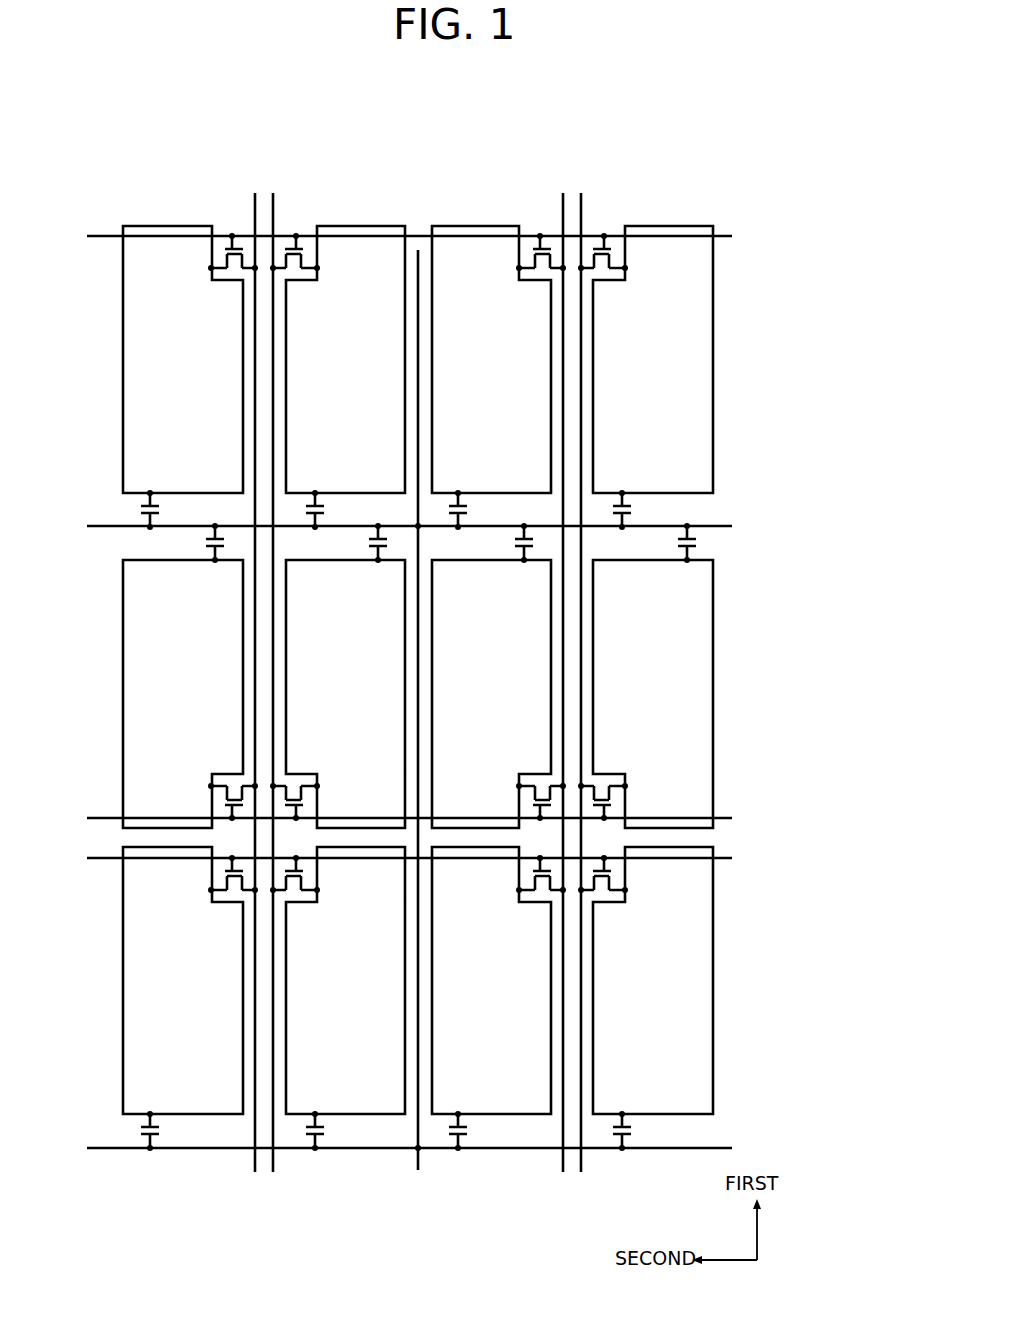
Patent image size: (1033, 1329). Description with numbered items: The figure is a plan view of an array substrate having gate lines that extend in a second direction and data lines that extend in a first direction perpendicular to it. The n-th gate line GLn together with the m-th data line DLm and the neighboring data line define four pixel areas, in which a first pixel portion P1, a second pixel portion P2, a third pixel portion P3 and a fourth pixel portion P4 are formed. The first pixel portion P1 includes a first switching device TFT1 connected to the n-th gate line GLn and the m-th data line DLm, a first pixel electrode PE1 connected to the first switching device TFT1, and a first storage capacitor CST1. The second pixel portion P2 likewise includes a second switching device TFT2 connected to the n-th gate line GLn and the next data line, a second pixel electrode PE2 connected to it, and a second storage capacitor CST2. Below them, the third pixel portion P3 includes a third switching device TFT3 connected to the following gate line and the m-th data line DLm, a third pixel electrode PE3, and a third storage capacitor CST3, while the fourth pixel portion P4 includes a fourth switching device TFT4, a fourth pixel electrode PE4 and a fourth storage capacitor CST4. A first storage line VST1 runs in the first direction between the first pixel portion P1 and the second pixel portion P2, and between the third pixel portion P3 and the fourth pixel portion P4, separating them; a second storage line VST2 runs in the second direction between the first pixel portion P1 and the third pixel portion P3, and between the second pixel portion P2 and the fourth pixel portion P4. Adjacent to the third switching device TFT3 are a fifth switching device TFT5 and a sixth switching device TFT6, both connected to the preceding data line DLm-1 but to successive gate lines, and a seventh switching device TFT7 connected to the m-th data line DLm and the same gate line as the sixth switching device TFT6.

The (m−1)-th data line DLm-1 is at (255, 195).
The m-th data line DLm is at (273, 195).
The n-th gate line GLn is at (732, 240).
The first storage line VST1 is at (418, 1162).
The second storage line VST2 is at (732, 530).
The first switching device TFT1 is at (317, 268).
The second switching device TFT2 is at (519, 268).
The third switching device TFT3 is at (317, 787).
The fourth switching device TFT4 is at (519, 787).
The fifth switching device TFT5 is at (212, 787).
The sixth switching device TFT6 is at (212, 890).
The seventh switching device TFT7 is at (317, 890).
The first pixel portion P1 is at (231, 378).
The second pixel portion P2 is at (607, 378).
The third pixel portion P3 is at (234, 675).
The fourth pixel portion P4 is at (604, 675).
The first pixel electrode PE1 is at (282, 372).
The second pixel electrode PE2 is at (553, 366).
The third pixel electrode PE3 is at (282, 633).
The fourth pixel electrode PE4 is at (553, 628).
The first storage capacitor CST1 is at (320, 500).
The second storage capacitor CST2 is at (462, 500).
The third storage capacitor CST3 is at (373, 552).
The fourth storage capacitor CST4 is at (518, 552).